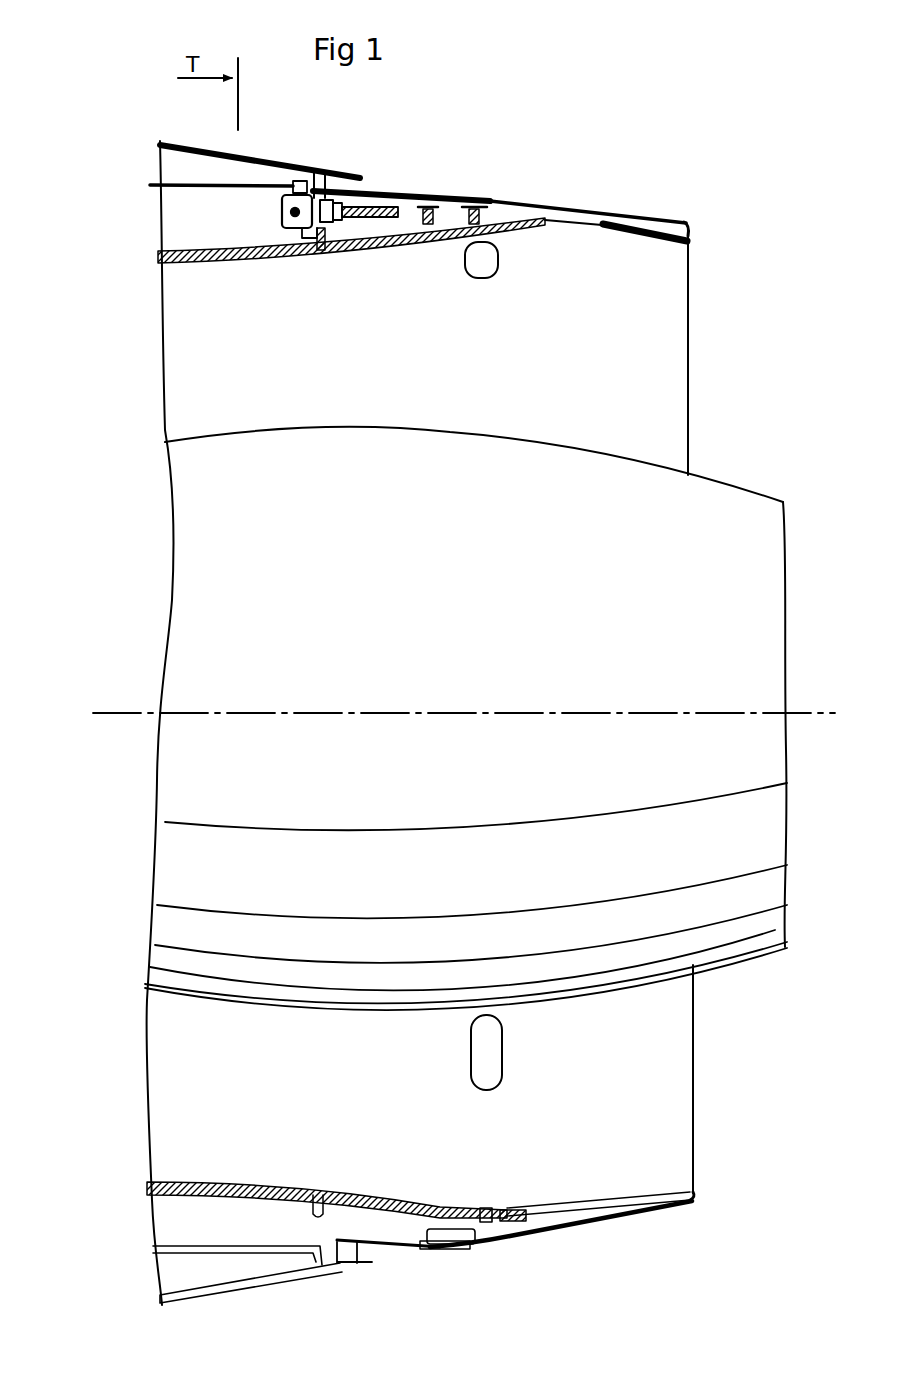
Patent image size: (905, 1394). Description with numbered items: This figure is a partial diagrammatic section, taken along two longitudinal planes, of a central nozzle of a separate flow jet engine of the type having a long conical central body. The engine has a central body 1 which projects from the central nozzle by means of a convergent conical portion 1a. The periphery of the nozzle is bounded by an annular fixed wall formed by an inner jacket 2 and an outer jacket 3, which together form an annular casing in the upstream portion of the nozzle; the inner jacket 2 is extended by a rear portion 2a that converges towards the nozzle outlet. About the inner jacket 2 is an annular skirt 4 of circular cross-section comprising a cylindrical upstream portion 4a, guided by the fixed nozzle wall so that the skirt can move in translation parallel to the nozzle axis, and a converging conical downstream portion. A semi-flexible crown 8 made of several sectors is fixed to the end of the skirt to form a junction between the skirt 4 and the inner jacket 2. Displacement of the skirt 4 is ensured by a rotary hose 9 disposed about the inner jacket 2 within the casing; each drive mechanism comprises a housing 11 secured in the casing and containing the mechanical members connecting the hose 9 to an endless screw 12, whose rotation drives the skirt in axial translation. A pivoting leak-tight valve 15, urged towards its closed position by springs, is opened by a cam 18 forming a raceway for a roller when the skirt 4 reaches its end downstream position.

The central body 1 is at (167, 789).
The convergent conical portion 1a is at (573, 960).
The inner jacket 2 is at (318, 250).
The rear portion 2a is at (568, 1205).
The outer jacket 3 is at (343, 172).
The annular skirt 4 is at (533, 200).
The cylindrical upstream portion 4a is at (428, 1250).
The semi-flexible crown 8 is at (688, 236).
The rotary hose 9 is at (295, 208).
The housing 11 is at (313, 172).
The endless screw 12 is at (356, 226).
The pivoting leak-tight valve 15 is at (483, 1208).
The cam 18 is at (448, 1237).